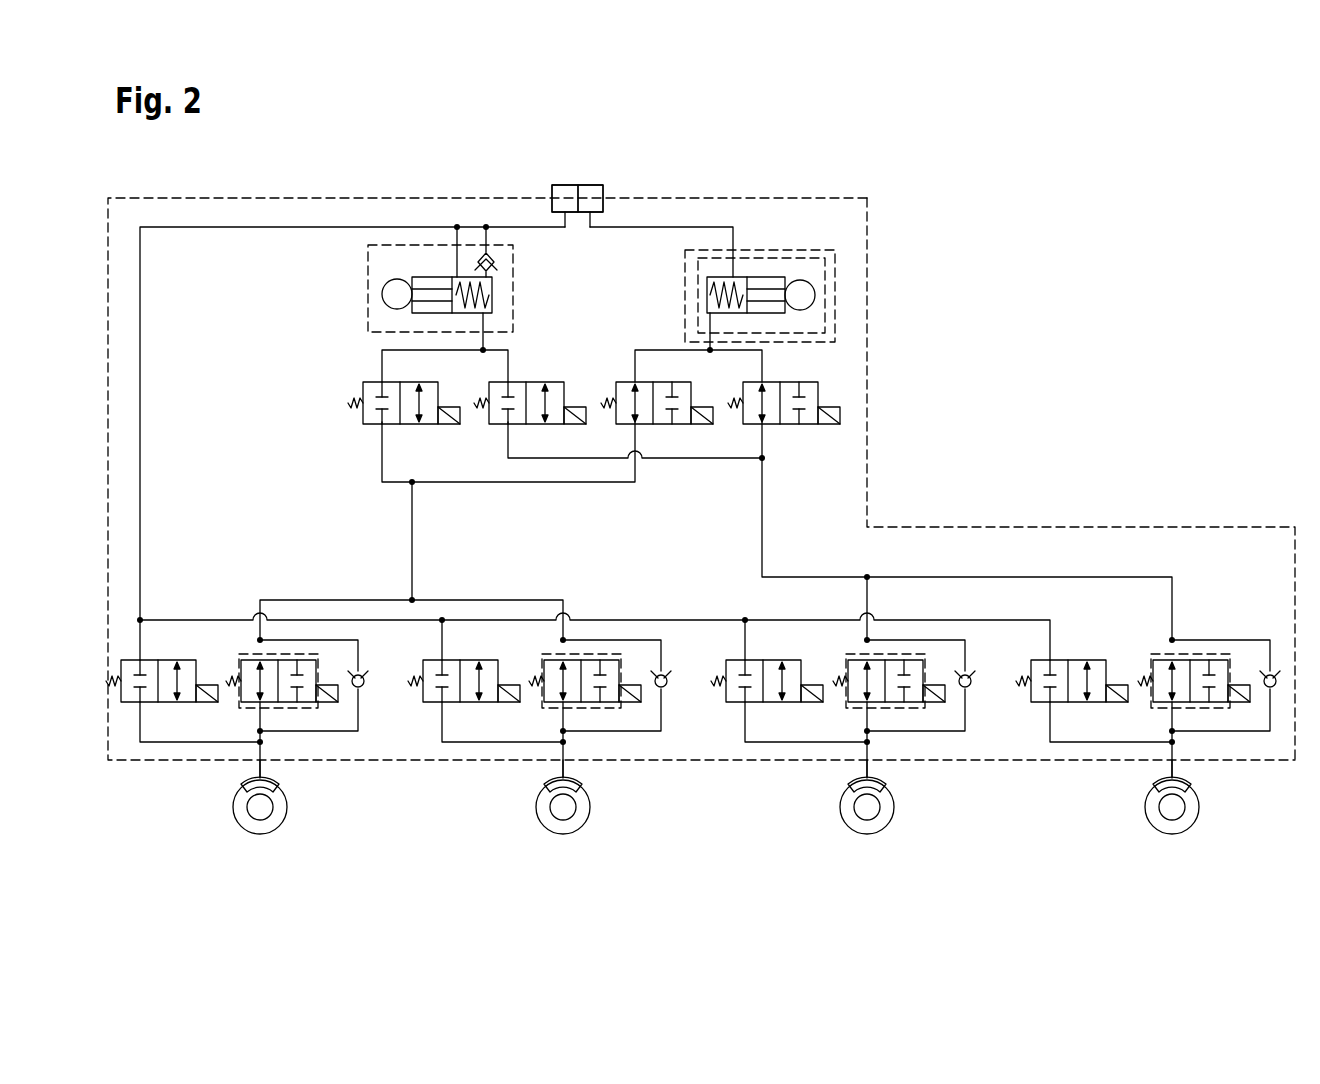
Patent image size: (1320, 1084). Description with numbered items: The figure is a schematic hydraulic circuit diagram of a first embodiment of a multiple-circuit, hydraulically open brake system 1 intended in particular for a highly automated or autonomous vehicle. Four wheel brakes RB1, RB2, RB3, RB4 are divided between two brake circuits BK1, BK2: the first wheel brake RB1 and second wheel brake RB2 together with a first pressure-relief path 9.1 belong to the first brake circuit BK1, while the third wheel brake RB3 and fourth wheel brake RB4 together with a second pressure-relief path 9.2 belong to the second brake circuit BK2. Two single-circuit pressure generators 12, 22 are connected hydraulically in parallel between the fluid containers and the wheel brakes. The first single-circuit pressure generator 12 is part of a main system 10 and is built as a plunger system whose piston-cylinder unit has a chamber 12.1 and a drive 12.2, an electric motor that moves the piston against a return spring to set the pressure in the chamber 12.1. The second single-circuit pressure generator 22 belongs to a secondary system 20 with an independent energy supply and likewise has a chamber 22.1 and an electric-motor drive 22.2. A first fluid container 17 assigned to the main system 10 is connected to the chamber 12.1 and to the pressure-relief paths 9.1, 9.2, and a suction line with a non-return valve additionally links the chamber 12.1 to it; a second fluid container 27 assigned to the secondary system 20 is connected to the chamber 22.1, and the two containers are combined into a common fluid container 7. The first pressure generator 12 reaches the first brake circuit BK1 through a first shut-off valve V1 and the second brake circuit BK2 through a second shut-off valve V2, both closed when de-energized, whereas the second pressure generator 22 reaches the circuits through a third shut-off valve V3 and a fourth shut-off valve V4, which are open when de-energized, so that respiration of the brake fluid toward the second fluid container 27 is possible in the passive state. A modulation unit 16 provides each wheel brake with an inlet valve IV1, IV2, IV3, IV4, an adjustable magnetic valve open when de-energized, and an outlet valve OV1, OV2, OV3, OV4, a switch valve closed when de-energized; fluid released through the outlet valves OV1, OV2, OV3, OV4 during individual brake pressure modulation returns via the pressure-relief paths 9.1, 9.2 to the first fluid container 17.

The multiple-circuit, hydraulically open brake system 1 is at (1137, 229).
The common fluid container 7 is at (554, 186).
The first fluid container 17 is at (562, 185).
The second fluid container 27 is at (594, 185).
The first pressure-relief path 9.1 is at (220, 618).
The second pressure-relief path 9.2 is at (824, 617).
The main system 10 is at (1058, 527).
The first single-circuit pressure generator 12 is at (418, 288).
The chamber 12.1 is at (492, 290).
The drive 12.2 is at (382, 294).
The modulation unit 16 is at (1107, 379).
The secondary system 20 is at (836, 262).
The second single-circuit pressure generator 22 is at (839, 253).
The chamber 22.1 is at (738, 277).
The drive 22.2 is at (815, 295).
The first shut-off valve V1 is at (404, 420).
The second shut-off valve V2 is at (530, 420).
The third shut-off valve V3 is at (657, 420).
The fourth shut-off valve V4 is at (784, 420).
The first outlet valve OV1 is at (162, 698).
The second outlet valve OV2 is at (464, 698).
The third outlet valve OV3 is at (767, 698).
The fourth outlet valve OV4 is at (1072, 698).
The first inlet valve IV1 is at (290, 704).
The second inlet valve IV2 is at (593, 704).
The third inlet valve IV3 is at (897, 704).
The fourth inlet valve IV4 is at (1202, 704).
The first wheel brake RB1 is at (260, 835).
The second wheel brake RB2 is at (563, 835).
The third wheel brake RB3 is at (867, 835).
The fourth wheel brake RB4 is at (1172, 835).
The first brake circuit BK1 is at (396, 815).
The second brake circuit BK2 is at (1016, 815).